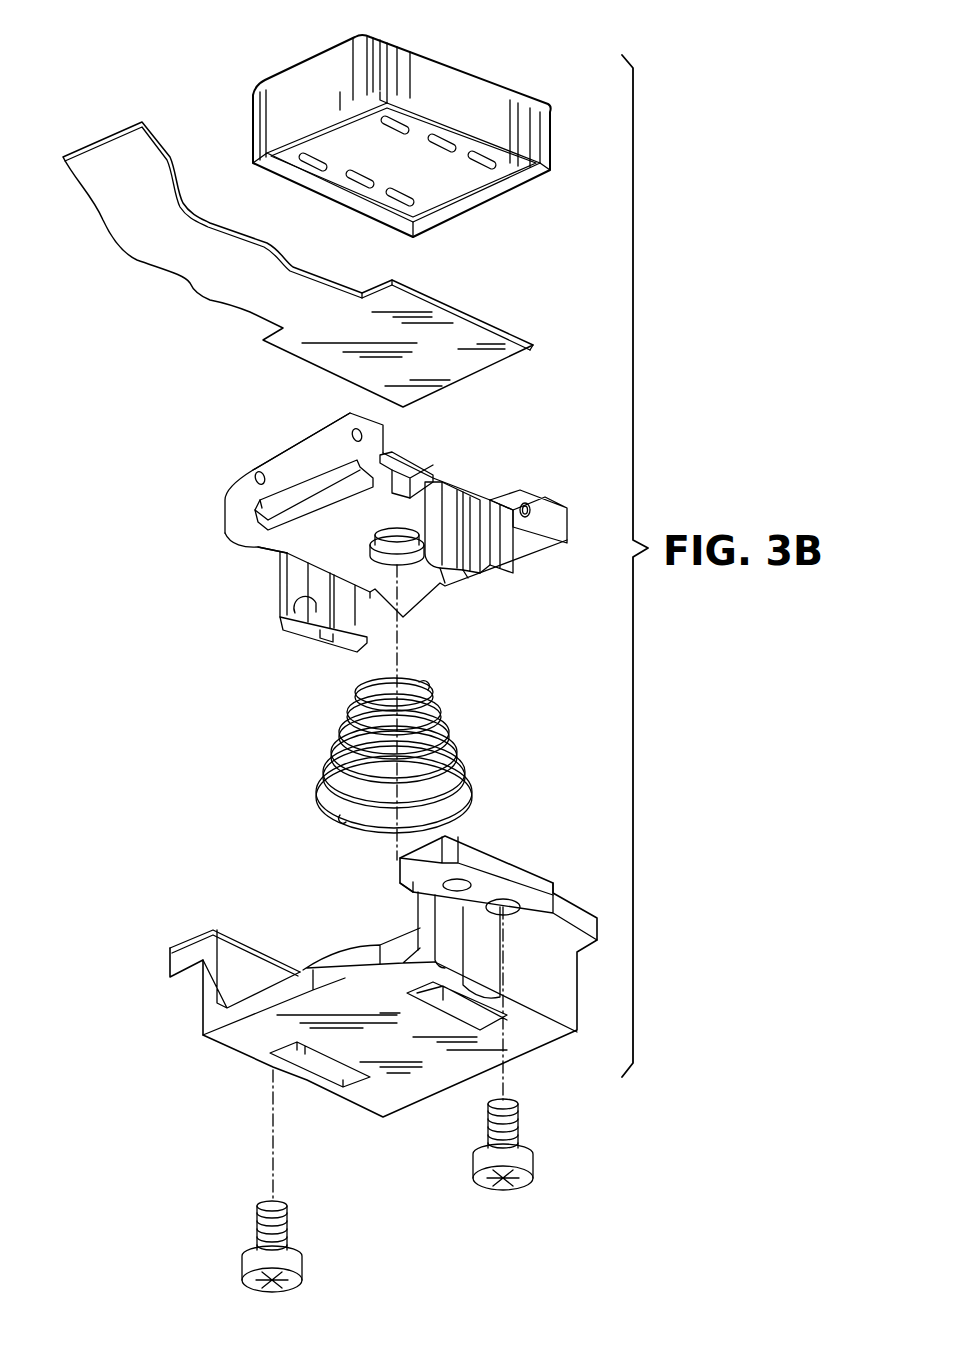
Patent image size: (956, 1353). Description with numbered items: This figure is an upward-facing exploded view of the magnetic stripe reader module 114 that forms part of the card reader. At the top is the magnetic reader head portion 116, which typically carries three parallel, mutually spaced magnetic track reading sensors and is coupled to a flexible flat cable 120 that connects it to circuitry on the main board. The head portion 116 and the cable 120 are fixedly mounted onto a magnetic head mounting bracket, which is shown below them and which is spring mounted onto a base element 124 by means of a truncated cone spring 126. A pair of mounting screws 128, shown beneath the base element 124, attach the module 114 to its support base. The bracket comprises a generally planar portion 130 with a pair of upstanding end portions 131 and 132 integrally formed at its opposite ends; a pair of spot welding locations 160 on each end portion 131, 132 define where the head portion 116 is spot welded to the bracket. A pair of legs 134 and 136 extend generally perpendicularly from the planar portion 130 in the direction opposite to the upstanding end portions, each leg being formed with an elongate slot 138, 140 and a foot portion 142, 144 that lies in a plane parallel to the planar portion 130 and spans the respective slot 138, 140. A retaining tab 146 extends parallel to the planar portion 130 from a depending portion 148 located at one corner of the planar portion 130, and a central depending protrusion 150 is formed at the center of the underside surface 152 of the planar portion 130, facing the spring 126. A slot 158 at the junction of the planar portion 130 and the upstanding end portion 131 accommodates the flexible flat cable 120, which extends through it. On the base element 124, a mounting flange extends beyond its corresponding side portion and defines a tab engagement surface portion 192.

The magnetic stripe reader module 114 is at (667, 320).
The magnetic reader head portion 116 is at (483, 97).
The flexible flat cable 120 is at (186, 288).
The base element 124 is at (213, 990).
The truncated cone spring 126 is at (333, 740).
The mounting screws 128 is at (470, 1170).
The generally planar portion 130 is at (323, 525).
The upstanding end portion 131 is at (307, 447).
The upstanding end portion 132 is at (545, 508).
The leg 134 is at (503, 550).
The leg 136 is at (292, 583).
The elongate slot 138 is at (495, 568).
The elongate slot 140 is at (317, 598).
The foot portion 142 is at (463, 580).
The foot portion 144 is at (327, 633).
The retaining tab 146 is at (432, 480).
The depending portion 148 is at (407, 472).
The central depending protrusion 150 is at (403, 560).
The underside surface 152 is at (295, 543).
The slot 158 is at (307, 492).
The spot welding locations 160 is at (523, 507).
The tab engagement surface portion 192 is at (410, 890).